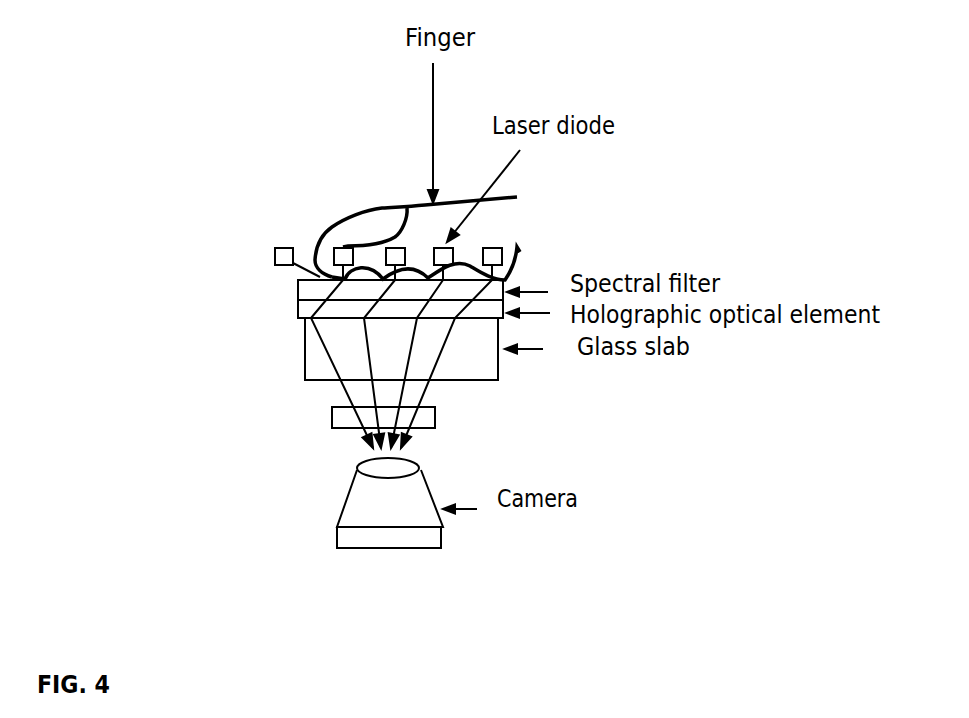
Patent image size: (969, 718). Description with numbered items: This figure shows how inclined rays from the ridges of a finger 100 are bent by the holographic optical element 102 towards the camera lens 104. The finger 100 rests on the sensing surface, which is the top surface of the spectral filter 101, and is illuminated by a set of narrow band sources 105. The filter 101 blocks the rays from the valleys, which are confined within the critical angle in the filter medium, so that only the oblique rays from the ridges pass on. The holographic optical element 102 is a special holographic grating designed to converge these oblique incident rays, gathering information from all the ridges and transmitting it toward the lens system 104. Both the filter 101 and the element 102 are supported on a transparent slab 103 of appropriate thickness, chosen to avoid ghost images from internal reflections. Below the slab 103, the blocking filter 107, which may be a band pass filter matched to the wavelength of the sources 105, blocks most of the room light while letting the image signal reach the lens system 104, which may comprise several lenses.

The finger 100 is at (355, 223).
The spectral filter 101 is at (310, 292).
The holographic optical element 102 is at (298, 312).
The transparent slab 103 is at (317, 375).
The lens system 104 is at (363, 462).
The narrow band sources 105 is at (278, 247).
The blocking filter 107 is at (433, 422).